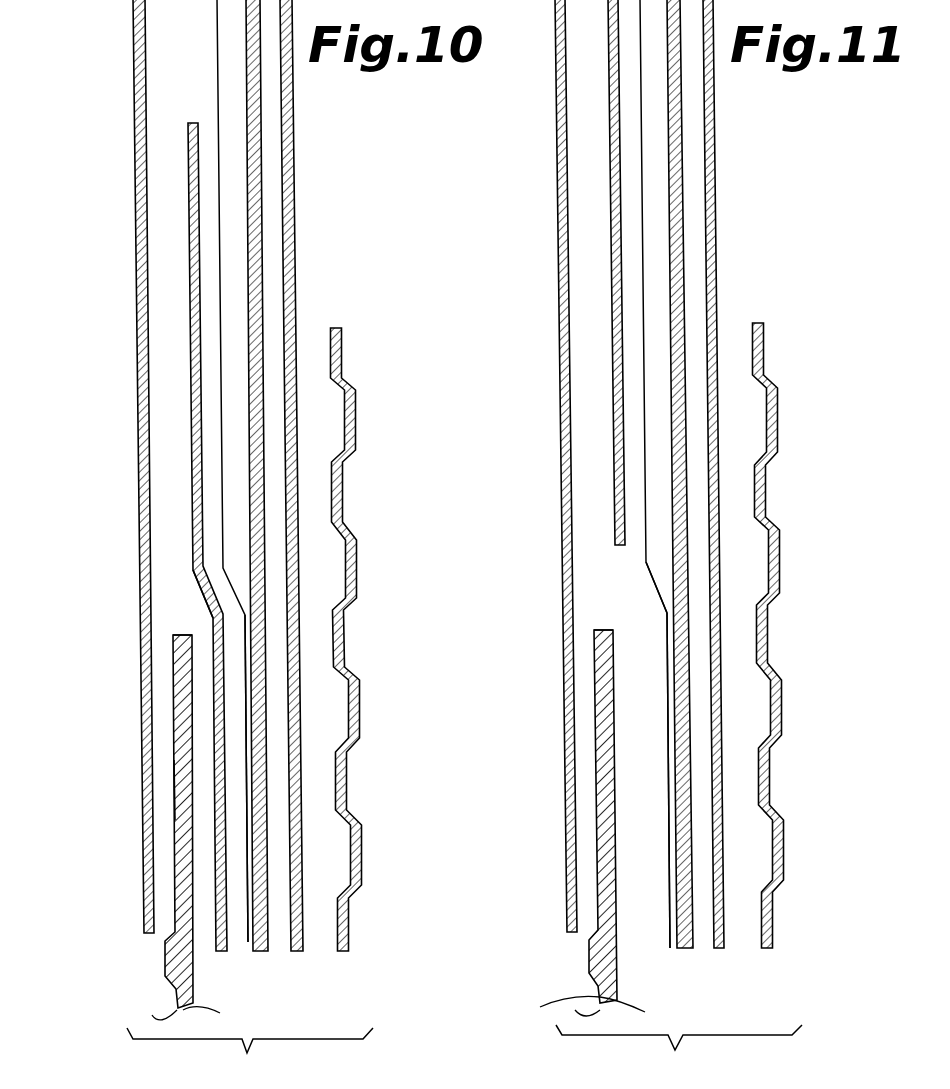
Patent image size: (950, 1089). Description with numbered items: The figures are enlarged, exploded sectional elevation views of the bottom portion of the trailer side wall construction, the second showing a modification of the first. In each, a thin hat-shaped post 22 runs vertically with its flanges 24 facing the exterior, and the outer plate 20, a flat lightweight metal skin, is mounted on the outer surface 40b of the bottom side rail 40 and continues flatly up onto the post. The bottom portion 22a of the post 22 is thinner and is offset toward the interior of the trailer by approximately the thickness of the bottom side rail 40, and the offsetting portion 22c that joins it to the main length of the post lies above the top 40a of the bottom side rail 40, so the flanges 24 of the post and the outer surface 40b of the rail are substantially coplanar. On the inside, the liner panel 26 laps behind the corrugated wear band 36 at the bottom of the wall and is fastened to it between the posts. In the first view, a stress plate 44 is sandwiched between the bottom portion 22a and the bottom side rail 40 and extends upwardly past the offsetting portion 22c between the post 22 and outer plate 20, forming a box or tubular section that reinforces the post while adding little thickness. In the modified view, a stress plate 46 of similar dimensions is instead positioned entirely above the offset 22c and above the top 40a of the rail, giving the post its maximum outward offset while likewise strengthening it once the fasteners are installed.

In FIG. 10, the outer plate 20 is at (140, 418).
In FIG. 11, the outer plate 20 is at (558, 296).
In FIG. 10, the post 22 is at (262, 172).
In FIG. 11, the post 22 is at (683, 253).
In FIG. 10, the bottom portion 22a is at (243, 721).
In FIG. 11, the bottom portion 22a is at (664, 660).
In FIG. 10, the offsetting portion 22c is at (201, 600).
In FIG. 11, the offsetting portion 22c is at (653, 586).
In FIG. 10, the flange 24 is at (142, 535).
In FIG. 11, the flange 24 is at (642, 403).
In FIG. 10, the liner panel 26 is at (294, 271).
In FIG. 11, the liner panel 26 is at (714, 293).
In FIG. 10, the wear band 36 is at (362, 857).
In FIG. 11, the wear band 36 is at (782, 847).
In FIG. 10, the bottom side rail 40 is at (165, 1012).
In FIG. 11, the bottom side rail 40 is at (580, 1005).
In FIG. 10, the top of the bottom side rail 40a is at (178, 636).
In FIG. 11, the top of the bottom side rail 40a is at (600, 632).
In FIG. 10, the outer surface of the bottom side rail 40b is at (175, 786).
In FIG. 10, the stress plate 44 is at (137, 313).
In FIG. 11, the stress plate 46 is at (613, 153).